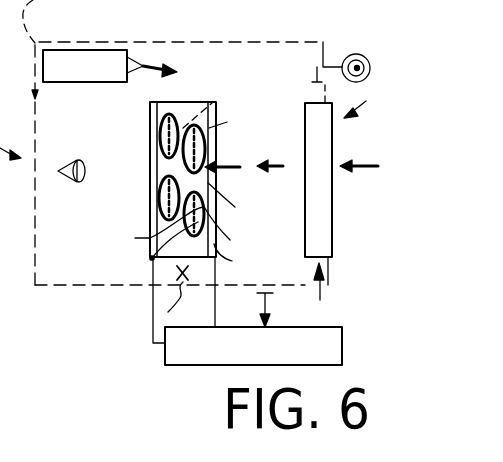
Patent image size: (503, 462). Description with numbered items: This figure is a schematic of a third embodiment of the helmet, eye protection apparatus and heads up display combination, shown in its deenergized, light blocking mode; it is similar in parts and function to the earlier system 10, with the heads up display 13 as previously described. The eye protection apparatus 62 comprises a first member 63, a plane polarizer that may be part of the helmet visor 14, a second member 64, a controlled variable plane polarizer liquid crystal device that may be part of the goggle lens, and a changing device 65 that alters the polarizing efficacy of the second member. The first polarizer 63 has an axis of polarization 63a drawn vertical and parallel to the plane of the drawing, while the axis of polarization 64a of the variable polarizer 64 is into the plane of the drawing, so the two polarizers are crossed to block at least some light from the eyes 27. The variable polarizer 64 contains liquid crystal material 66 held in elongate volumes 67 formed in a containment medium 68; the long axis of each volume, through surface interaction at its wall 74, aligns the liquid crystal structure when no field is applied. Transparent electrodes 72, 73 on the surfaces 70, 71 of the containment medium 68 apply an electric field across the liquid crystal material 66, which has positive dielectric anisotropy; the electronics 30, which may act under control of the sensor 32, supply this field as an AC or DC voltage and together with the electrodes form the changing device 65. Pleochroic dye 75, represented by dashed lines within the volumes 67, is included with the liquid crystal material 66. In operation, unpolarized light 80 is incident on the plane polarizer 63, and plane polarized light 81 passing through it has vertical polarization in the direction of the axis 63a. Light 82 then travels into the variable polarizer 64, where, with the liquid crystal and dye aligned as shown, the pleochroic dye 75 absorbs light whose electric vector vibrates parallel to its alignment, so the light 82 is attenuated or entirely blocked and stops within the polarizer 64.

The system 10 is at (10, 136).
The heads up display 13 is at (113, 83).
The helmet visor 14 is at (350, 226).
The eyes 27 is at (67, 162).
The electronics 30 is at (195, 366).
The sensor 32 is at (356, 54).
The eye protection apparatus 62 is at (368, 102).
The first member 63 is at (332, 147).
The axis of polarization 63a is at (320, 300).
The second member 64 is at (202, 258).
The axis of polarization 64a is at (168, 312).
The changing device 65 is at (142, 296).
The liquid crystal material 66 is at (154, 229).
The volumes 67 is at (235, 261).
The containment medium 68 is at (230, 229).
The surface 70 is at (232, 124).
The surface 71 is at (152, 134).
The transparent electrode 72 is at (216, 143).
The transparent electrode 73 is at (150, 140).
The wall 74 is at (151, 258).
The pleochroic dye 75 is at (213, 96).
The unpolarized light 80 is at (370, 168).
The plane polarized light 81 is at (283, 160).
The light 82 is at (235, 205).